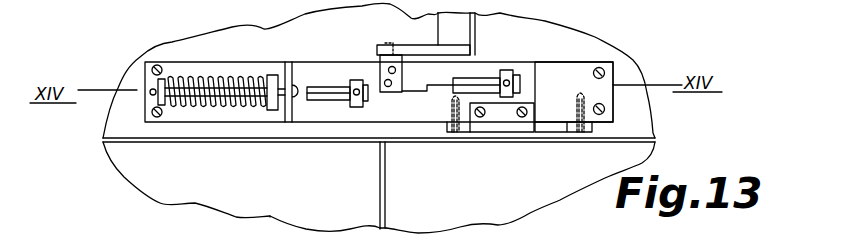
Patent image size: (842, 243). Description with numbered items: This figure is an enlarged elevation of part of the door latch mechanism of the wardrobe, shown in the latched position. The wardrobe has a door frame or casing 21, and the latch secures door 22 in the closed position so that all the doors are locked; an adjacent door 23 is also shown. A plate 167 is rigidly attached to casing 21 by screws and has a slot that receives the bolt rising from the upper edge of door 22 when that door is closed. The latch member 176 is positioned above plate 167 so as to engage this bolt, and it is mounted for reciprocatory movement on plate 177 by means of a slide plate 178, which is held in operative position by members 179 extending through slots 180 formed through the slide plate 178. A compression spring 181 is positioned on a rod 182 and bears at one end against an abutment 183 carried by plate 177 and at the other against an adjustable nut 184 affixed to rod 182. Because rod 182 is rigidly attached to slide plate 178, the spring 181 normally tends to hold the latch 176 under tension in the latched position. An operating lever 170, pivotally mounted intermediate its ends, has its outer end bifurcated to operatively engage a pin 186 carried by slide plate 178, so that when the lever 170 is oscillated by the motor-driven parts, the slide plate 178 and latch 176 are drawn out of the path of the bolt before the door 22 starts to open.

The door frame or casing 21 is at (640, 117).
The door 22 is at (537, 208).
The table section 23 is at (270, 201).
The plate 167 is at (557, 136).
The operating lever 170 is at (431, 48).
The latch member 176 is at (520, 124).
The plate 177 is at (262, 63).
The slide plate 178 is at (433, 113).
The members 179 is at (510, 73).
The slots 180 is at (477, 83).
The compression spring 181 is at (197, 100).
The rod 182 is at (197, 100).
The abutment 183 is at (272, 110).
The adjustable nut 184 is at (150, 99).
The pin 186 is at (388, 43).